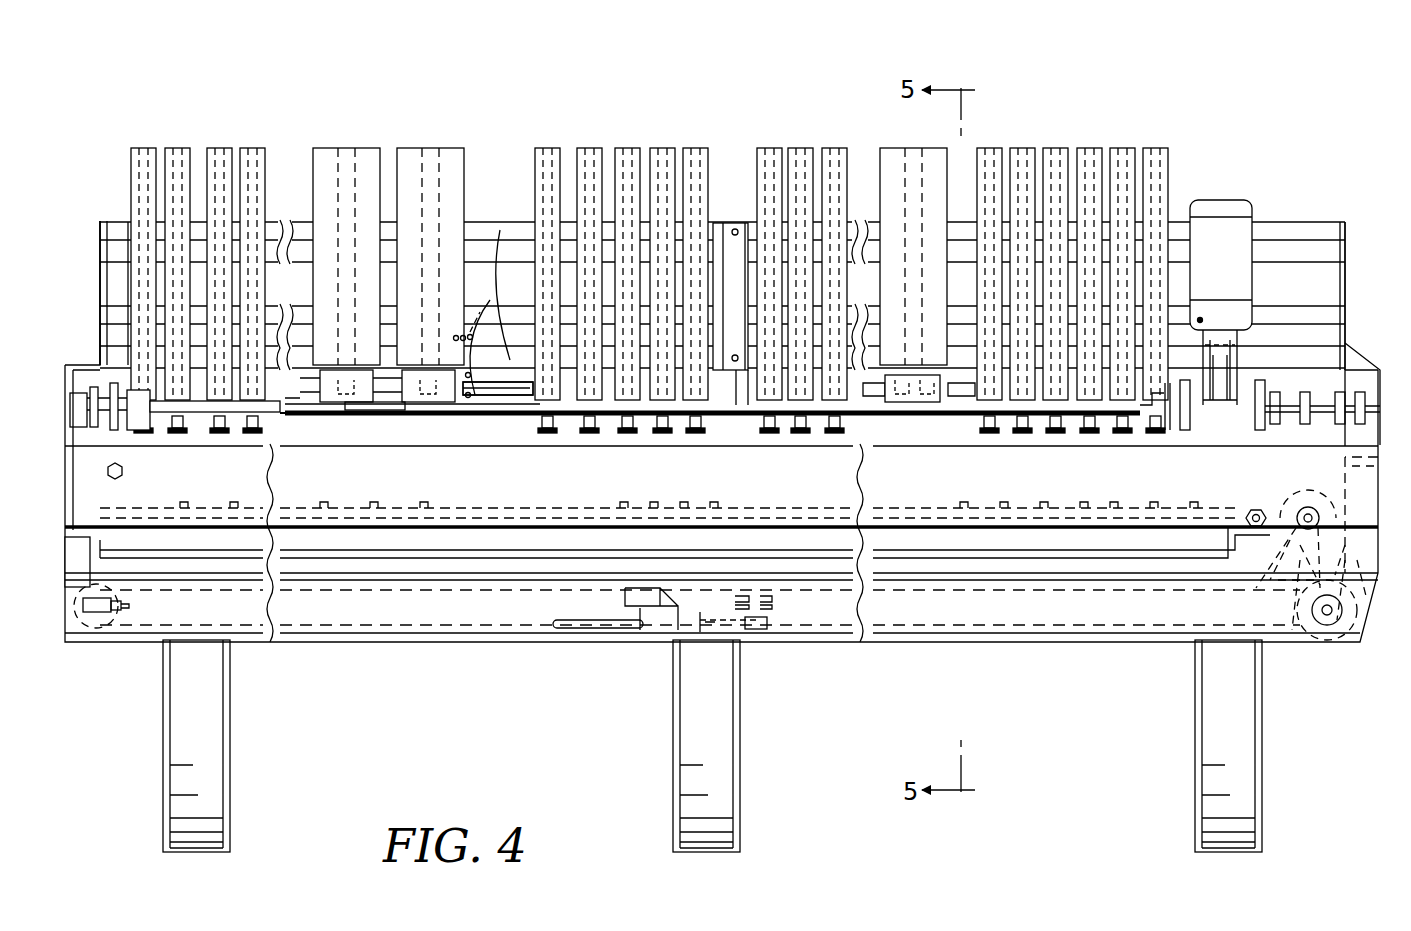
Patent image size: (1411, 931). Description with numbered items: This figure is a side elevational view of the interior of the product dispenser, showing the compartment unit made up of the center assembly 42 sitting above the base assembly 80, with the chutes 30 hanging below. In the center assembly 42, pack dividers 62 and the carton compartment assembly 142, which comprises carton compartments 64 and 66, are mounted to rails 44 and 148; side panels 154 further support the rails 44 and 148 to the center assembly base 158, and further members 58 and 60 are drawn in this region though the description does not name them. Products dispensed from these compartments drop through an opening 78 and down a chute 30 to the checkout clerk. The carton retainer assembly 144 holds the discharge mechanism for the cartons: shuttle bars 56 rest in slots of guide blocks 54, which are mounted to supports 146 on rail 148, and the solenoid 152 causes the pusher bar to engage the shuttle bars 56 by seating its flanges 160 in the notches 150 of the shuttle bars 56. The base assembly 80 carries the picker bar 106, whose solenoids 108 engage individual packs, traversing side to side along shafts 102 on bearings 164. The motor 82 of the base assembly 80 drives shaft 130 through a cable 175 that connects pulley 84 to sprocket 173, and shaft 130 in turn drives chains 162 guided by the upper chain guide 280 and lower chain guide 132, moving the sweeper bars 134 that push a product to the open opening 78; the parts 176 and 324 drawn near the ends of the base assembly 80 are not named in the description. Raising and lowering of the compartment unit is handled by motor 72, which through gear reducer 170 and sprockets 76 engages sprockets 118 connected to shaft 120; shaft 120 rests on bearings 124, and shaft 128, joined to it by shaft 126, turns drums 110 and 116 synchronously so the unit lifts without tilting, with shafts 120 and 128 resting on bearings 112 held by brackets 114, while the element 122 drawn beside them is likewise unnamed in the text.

The chute 30 is at (230, 782).
The center assembly 42 is at (112, 172).
The rail 44 is at (478, 226).
The guide block 54 is at (521, 346).
The shuttle bar 56 is at (486, 400).
The plate 58 is at (735, 224).
The guide post 60 is at (744, 404).
The pack divider 62 is at (600, 146).
The carton compartment 64 is at (370, 144).
The carton compartment 66 is at (330, 144).
The motor 72 is at (1214, 232).
The sprocket 76 is at (1296, 368).
The opening 78 is at (704, 622).
The base assembly 80 is at (58, 548).
The motor 82 is at (1333, 506).
The pulley 84 is at (1272, 546).
The shaft 102 is at (1248, 512).
The picker bar 106 is at (526, 536).
The solenoid 108 is at (706, 506).
The drum 110 is at (82, 394).
The bearing 112 is at (104, 418).
The bracket 114 is at (110, 430).
The drum 116 is at (150, 430).
The sprocket 118 is at (1258, 422).
The shaft 120 is at (1210, 428).
The mount 122 is at (1160, 422).
The bearing 124 is at (1140, 438).
The shaft 126 is at (748, 422).
The shaft 128 is at (286, 422).
The shaft 130 is at (1324, 624).
The lower chain guide 132 is at (572, 628).
The sweeper bar 134 is at (514, 640).
The carton compartment assembly 142 is at (450, 146).
The carton retainer assembly 144 is at (405, 413).
The support 146 is at (481, 330).
The rail 148 is at (498, 266).
The notch 150 is at (480, 406).
The solenoid 152 is at (418, 412).
The side panel 154 is at (98, 262).
The center assembly base 158 is at (52, 386).
The flange 160 is at (904, 400).
The chain 162 is at (416, 640).
The bearing 164 is at (1266, 520).
The gear reducer 170 is at (1236, 332).
The sprocket 173 is at (1344, 630).
The cable 175 is at (1352, 558).
The pulley 176 is at (106, 616).
The upper chain guide 280 is at (646, 630).
The fastener 324 is at (83, 612).